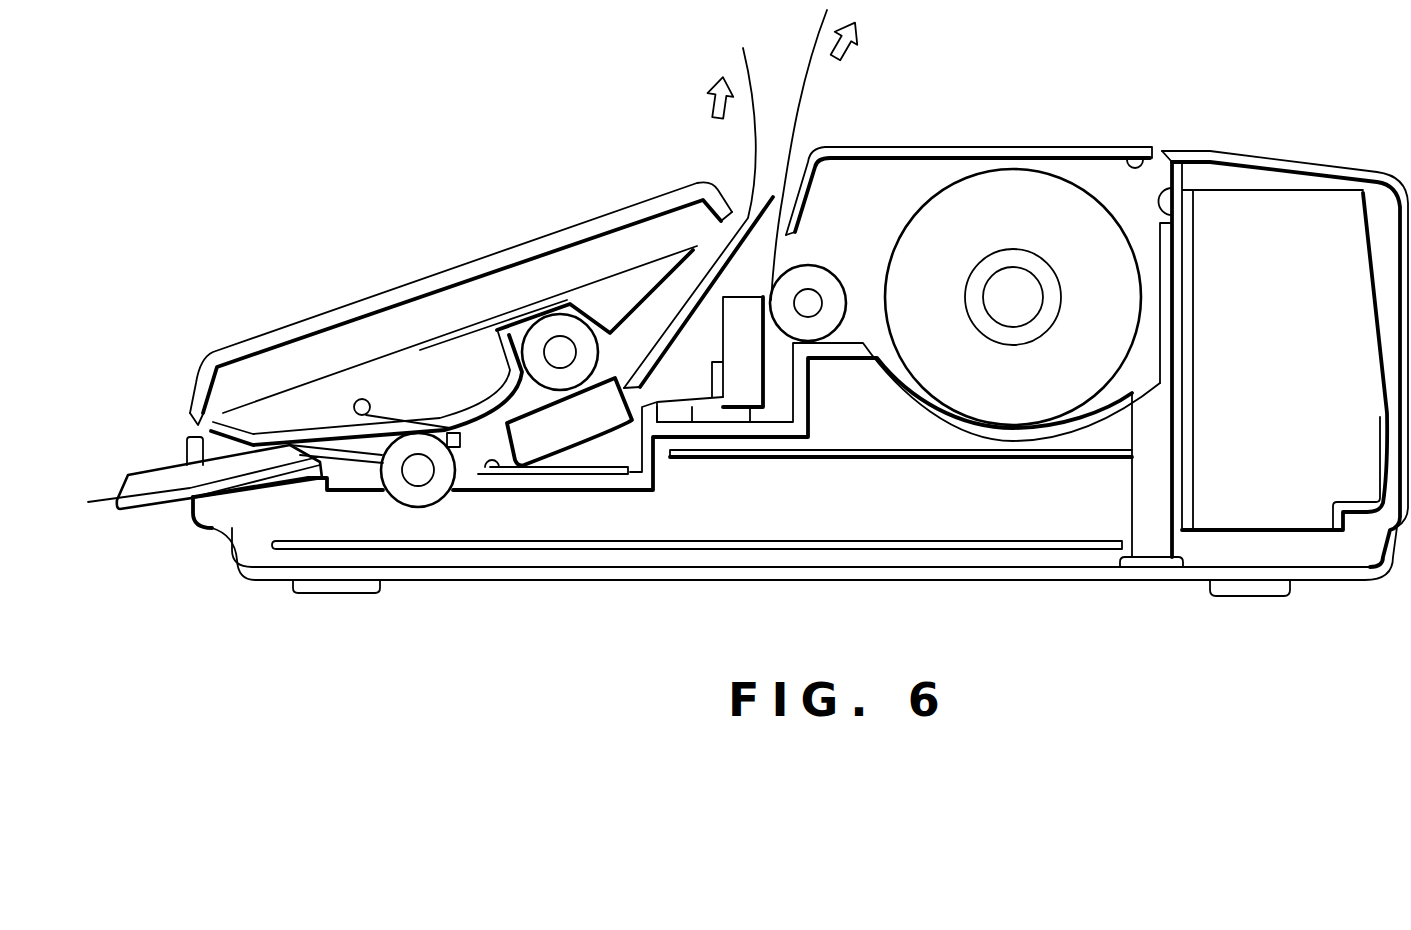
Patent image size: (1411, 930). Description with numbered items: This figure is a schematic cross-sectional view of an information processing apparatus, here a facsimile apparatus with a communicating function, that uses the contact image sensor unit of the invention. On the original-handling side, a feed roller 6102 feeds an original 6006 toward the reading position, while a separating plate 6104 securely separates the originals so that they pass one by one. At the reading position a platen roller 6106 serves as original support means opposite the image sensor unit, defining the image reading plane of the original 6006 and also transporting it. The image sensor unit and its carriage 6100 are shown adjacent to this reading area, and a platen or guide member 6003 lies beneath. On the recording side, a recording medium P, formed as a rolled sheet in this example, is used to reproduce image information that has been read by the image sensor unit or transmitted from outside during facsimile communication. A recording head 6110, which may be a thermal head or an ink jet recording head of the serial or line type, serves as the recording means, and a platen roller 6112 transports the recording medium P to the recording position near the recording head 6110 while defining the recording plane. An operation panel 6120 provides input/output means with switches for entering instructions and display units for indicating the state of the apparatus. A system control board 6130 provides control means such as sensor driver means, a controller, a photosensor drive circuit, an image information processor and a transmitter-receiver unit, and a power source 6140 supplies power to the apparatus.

The platen 6003 is at (618, 474).
The original 6006 is at (750, 147).
The recording head carriage 6100 is at (545, 447).
The feed roller 6102 is at (407, 498).
The separating plate 6104 is at (413, 423).
The platen roller 6106 is at (552, 318).
The recording head 6110 is at (753, 410).
The platen roller 6112 is at (836, 270).
The operation panel 6120 is at (307, 318).
The system control board 6130 is at (1033, 543).
The power source 6140 is at (1318, 215).
The recording medium P is at (1088, 192).